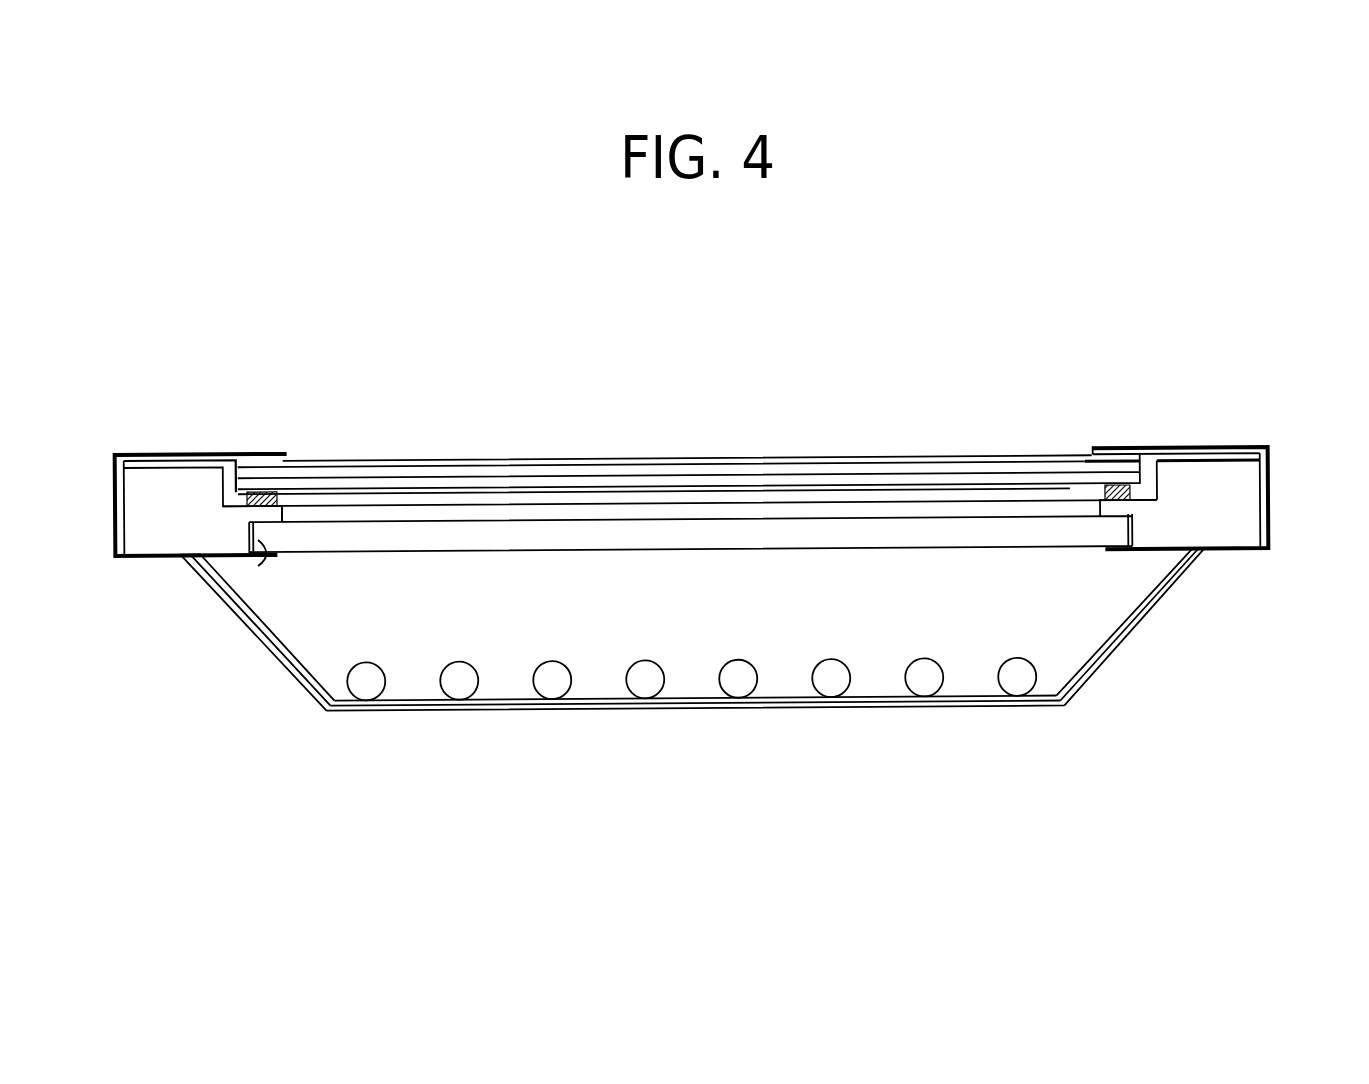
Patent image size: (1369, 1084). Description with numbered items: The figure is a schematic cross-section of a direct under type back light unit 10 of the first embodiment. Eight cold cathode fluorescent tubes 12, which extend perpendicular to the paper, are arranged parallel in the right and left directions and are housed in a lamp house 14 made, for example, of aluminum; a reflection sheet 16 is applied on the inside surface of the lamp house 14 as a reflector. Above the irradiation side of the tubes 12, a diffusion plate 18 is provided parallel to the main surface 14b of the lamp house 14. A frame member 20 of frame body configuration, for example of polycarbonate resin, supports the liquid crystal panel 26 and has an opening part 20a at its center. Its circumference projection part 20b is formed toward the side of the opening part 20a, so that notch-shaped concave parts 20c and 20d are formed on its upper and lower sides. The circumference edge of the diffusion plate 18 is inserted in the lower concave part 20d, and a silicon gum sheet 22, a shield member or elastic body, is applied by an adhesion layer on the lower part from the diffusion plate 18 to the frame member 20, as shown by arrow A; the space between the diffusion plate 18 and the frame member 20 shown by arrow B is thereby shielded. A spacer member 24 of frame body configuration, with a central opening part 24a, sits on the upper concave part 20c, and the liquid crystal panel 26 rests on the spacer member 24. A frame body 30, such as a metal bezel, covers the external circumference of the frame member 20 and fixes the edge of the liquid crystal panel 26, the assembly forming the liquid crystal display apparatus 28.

The back light unit 10 is at (250, 700).
The cold cathode fluorescent tube 12 is at (363, 683).
The lamp house 14 is at (853, 711).
The main surface of the lamp house 14b is at (770, 707).
The reflection sheet 16 is at (1105, 638).
The diffusion plate 18 is at (645, 530).
The frame member 20 is at (152, 480).
The opening part 20a is at (297, 507).
The circumference projection part 20b is at (273, 517).
The concave part 20c is at (233, 460).
The concave part 20d is at (262, 570).
The silicon gum sheet 22 is at (192, 556).
The spacer member 24 is at (1127, 487).
The opening part 24a is at (1070, 487).
The liquid crystal panel 26 is at (785, 470).
The liquid crystal display device 28 is at (227, 264).
The frame body 30 is at (1273, 458).
The arrow A is at (237, 538).
The arrow B is at (1136, 529).